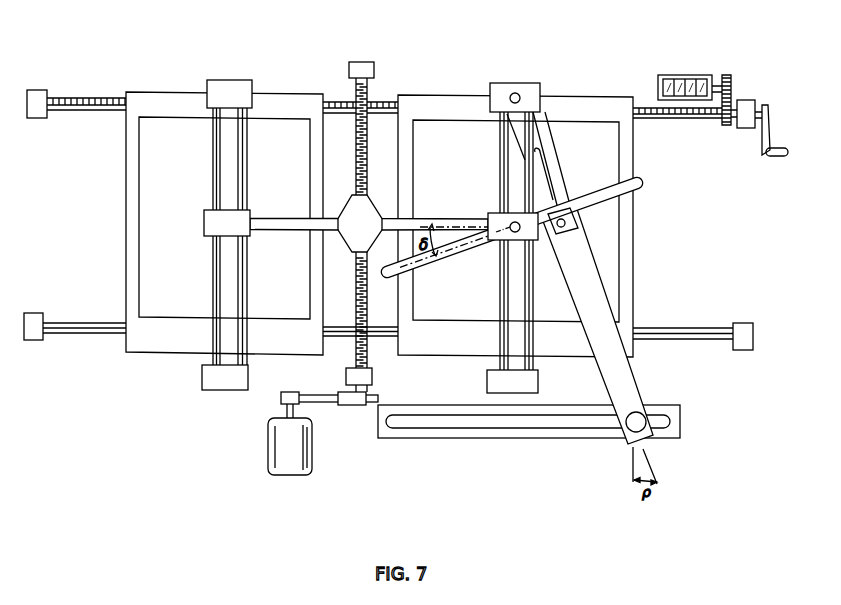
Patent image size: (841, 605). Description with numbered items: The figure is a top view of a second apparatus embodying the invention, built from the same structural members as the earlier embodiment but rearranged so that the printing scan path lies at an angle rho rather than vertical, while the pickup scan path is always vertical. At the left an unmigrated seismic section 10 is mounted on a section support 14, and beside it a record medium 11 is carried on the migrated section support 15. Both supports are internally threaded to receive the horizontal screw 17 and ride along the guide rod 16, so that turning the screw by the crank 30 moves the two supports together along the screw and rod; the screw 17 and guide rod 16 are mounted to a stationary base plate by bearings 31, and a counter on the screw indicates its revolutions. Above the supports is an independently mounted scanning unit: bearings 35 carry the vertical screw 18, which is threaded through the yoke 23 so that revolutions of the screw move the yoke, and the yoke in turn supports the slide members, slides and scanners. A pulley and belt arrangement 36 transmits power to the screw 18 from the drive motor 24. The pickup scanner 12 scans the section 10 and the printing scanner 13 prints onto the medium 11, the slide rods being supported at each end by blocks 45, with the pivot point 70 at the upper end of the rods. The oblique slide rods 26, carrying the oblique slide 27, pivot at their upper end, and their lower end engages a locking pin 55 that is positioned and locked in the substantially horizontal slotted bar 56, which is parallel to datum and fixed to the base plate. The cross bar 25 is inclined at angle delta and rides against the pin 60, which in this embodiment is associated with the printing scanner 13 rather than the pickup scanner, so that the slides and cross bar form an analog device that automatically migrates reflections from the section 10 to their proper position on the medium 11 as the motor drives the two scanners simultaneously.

The unmigrated seismic section 10 is at (224, 202).
The record medium 11 is at (515, 204).
The pickup scanner 12 is at (218, 228).
The printing scanner 13 is at (550, 230).
The section support 14 is at (170, 345).
The migrated section support 15 is at (568, 347).
The guide rod 16 is at (86, 323).
The horizontal screw 17 is at (93, 98).
The vertical screw 18 is at (370, 93).
The yoke 23 is at (355, 242).
The drive motor 24 is at (312, 452).
The cross bar 25 is at (462, 250).
The oblique slide rods 26 is at (553, 154).
The oblique slide 27 is at (512, 234).
The crank 30 is at (763, 135).
The bearings 31 is at (38, 90).
The bearings 35 is at (349, 72).
The pulley and belt arrangement 36 is at (342, 394).
The blocks 45 is at (372, 242).
The locking pin 55 is at (640, 415).
The slotted bar 56 is at (531, 438).
The pin 60 is at (563, 233).
The pivot point 70 is at (510, 97).